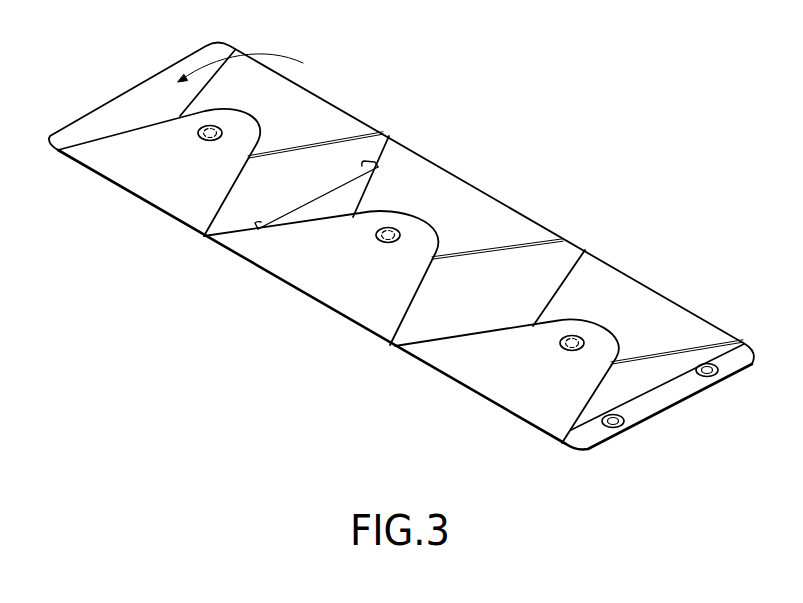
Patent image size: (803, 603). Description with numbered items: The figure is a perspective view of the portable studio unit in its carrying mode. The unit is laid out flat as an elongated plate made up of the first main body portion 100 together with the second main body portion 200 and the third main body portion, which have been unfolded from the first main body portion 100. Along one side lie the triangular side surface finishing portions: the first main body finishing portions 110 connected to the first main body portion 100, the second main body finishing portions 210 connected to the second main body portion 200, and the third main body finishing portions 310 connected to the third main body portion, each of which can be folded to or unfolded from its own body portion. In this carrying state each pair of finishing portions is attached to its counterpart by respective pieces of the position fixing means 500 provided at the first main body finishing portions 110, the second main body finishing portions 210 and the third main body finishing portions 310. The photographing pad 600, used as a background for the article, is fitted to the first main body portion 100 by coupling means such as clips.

The first main body portion 100 is at (532, 280).
The first main body finishing portions 110 is at (323, 277).
The second main body portion 200 is at (330, 167).
The second main body finishing portions 210 is at (140, 143).
The third main body finishing portions 310 is at (650, 306).
The position fixing means 500 is at (209, 125).
The photographing pad 600 is at (560, 257).